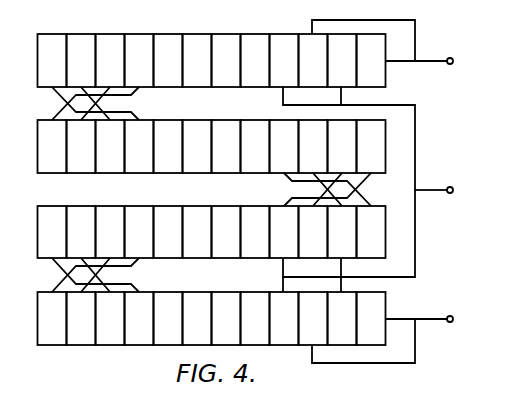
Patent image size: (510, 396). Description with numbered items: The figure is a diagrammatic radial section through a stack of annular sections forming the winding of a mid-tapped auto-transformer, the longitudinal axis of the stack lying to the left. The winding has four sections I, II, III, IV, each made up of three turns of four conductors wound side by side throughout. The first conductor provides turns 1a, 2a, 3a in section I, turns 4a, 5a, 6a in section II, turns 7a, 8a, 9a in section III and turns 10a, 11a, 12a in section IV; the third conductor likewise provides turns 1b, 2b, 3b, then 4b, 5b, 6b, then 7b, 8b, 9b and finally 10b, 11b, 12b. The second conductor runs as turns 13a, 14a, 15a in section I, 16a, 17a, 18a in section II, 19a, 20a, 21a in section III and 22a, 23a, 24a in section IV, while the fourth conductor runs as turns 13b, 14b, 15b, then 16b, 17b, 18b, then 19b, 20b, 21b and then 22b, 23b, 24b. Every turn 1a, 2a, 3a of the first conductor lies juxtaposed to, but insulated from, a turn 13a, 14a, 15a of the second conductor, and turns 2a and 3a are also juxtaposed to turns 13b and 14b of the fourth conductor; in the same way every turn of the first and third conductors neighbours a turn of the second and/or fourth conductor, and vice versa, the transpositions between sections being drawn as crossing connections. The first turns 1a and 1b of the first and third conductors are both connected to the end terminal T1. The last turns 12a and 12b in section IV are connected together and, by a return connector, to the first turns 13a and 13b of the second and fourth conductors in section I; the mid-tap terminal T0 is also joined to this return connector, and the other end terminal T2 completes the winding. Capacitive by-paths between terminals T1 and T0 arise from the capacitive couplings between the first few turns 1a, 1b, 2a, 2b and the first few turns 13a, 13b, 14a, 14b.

The section I is at (21, 58).
The section II is at (22, 144).
The section III is at (24, 230).
The section IV is at (28, 316).
The end terminal T1 is at (433, 61).
The mid-tap terminal T0 is at (447, 190).
The end terminal T2 is at (433, 319).
The first turn of first conductor 1a is at (371, 60).
The first turn of third conductor 1b is at (313, 60).
The turn of first conductor 2a is at (255, 60).
The turn of third conductor 2b is at (197, 60).
The turn of first conductor 3a is at (139, 60).
The turn of third conductor 3b is at (81, 60).
The turn of first conductor 4a is at (52, 146).
The turn of third conductor 4b is at (110, 146).
The turn of first conductor 5a is at (168, 146).
The turn of third conductor 5b is at (226, 146).
The turn of first conductor 6a is at (284, 146).
The turn of third conductor 6b is at (342, 146).
The turn of first conductor 7a is at (371, 232).
The turn of third conductor 7b is at (313, 232).
The turn of first conductor 8a is at (255, 232).
The turn of third conductor 8b is at (197, 232).
The turn of first conductor 9a is at (139, 232).
The turn of third conductor 9b is at (81, 232).
The turn of first conductor 10a is at (52, 318).
The turn of third conductor 10b is at (110, 318).
The turn of first conductor 11a is at (168, 318).
The turn of third conductor 11b is at (226, 318).
The last turn of first conductor 12a is at (284, 318).
The last turn of third conductor 12b is at (342, 318).
The first turn of second conductor 13a is at (342, 60).
The first turn of fourth conductor 13b is at (284, 60).
The turn of second conductor 14a is at (226, 60).
The turn of fourth conductor 14b is at (168, 60).
The turn of second conductor 15a is at (110, 60).
The turn of fourth conductor 15b is at (52, 60).
The turn of second conductor 16a is at (81, 146).
The turn of fourth conductor 16b is at (139, 146).
The turn of second conductor 17a is at (197, 146).
The turn of fourth conductor 17b is at (255, 146).
The turn of second conductor 18a is at (313, 146).
The turn of fourth conductor 18b is at (371, 146).
The turn of second conductor 19a is at (342, 232).
The turn of fourth conductor 19b is at (284, 232).
The turn of second conductor 20a is at (226, 232).
The turn of fourth conductor 20b is at (168, 232).
The turn of second conductor 21a is at (110, 232).
The turn of fourth conductor 21b is at (52, 232).
The turn of second conductor 22a is at (81, 318).
The turn of fourth conductor 22b is at (139, 318).
The turn of second conductor 23a is at (197, 318).
The turn of fourth conductor 23b is at (255, 318).
The turn of second conductor 24a is at (313, 318).
The turn of fourth conductor 24b is at (371, 318).